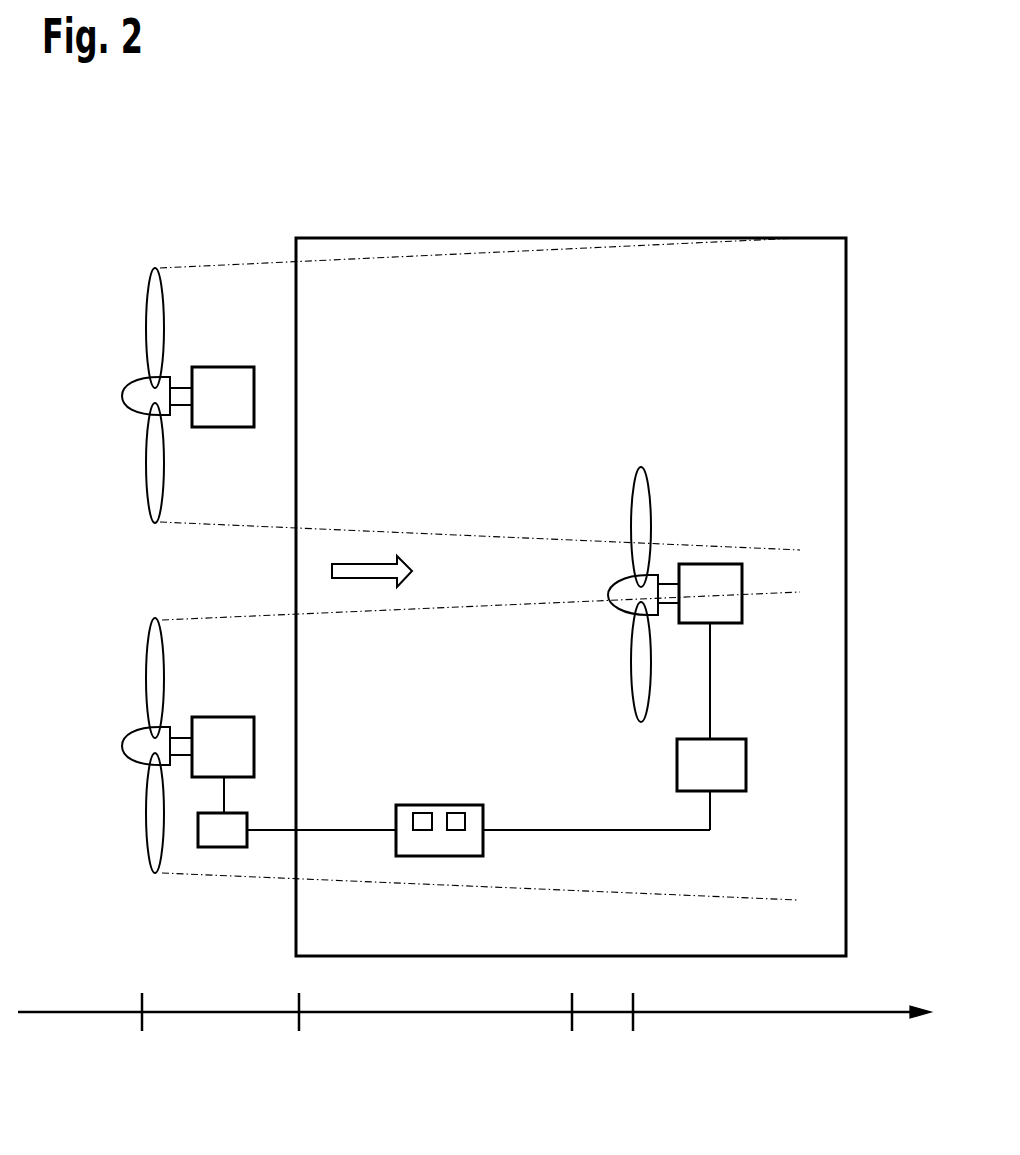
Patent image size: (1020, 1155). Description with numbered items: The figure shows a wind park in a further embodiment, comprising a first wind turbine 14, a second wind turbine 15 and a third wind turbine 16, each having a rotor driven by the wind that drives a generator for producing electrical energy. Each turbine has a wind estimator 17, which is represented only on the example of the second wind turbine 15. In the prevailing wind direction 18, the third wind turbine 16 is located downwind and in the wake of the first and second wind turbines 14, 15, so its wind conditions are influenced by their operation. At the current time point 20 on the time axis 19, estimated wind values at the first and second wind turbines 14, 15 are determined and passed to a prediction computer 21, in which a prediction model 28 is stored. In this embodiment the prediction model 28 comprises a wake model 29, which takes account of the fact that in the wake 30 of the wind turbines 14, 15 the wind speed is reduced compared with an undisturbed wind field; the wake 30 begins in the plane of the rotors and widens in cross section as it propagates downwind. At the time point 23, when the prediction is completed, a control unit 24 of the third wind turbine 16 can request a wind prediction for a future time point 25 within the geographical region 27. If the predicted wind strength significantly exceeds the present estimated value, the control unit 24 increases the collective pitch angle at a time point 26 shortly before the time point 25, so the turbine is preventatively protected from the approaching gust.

The first wind turbine 14 is at (145, 328).
The second wind turbine 15 is at (145, 681).
The third wind turbine 16 is at (710, 563).
The wind estimator 17 is at (225, 847).
The wind direction 18 is at (365, 565).
The time axis 19 is at (475, 1051).
The current time point 20 is at (141, 1035).
The prediction computer 21 is at (480, 785).
The time point 23 is at (299, 1035).
The control unit 24 is at (677, 760).
The future time point 25 is at (632, 1034).
The time point 26 is at (571, 1034).
The geographical region 27 is at (420, 237).
The prediction model 28 is at (455, 805).
The wake model 29 is at (422, 805).
The wake 30 is at (478, 254).